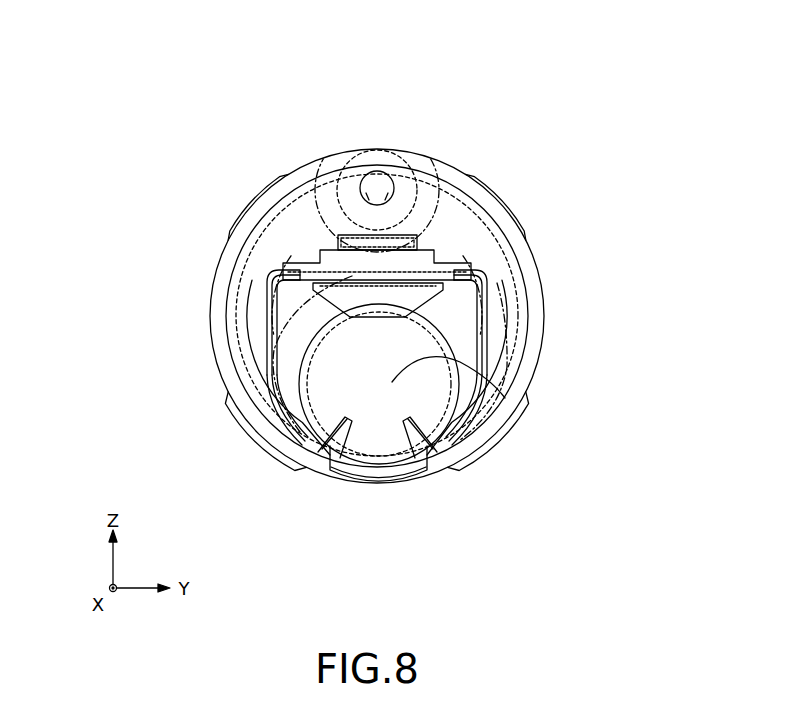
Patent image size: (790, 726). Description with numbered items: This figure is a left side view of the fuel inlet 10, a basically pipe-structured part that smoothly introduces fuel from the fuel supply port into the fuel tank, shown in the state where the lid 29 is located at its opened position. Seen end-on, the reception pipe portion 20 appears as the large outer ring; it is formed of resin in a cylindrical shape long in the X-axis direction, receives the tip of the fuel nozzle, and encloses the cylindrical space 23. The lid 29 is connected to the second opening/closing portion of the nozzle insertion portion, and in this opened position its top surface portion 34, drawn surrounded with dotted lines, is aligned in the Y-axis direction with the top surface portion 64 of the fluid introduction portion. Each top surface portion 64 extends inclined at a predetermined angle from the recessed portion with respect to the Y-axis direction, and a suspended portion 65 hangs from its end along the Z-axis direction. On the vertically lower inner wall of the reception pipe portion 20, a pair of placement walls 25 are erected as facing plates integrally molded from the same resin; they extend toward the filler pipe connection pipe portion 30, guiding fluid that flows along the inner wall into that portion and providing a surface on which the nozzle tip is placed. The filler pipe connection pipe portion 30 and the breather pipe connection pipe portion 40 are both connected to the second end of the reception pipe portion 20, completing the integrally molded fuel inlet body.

The fuel inlet 10 is at (601, 187).
The reception pipe portion 20 is at (265, 190).
The cylindrical space 23 is at (505, 398).
The placement walls 25 is at (427, 470).
The lid 29 is at (278, 398).
The filler pipe connection pipe portion 30 is at (320, 453).
The top surface portion 34 is at (332, 235).
The breather pipe connection pipe portion 40 is at (408, 165).
The top surface portion 64 is at (268, 268).
The suspended portion 65 is at (248, 322).